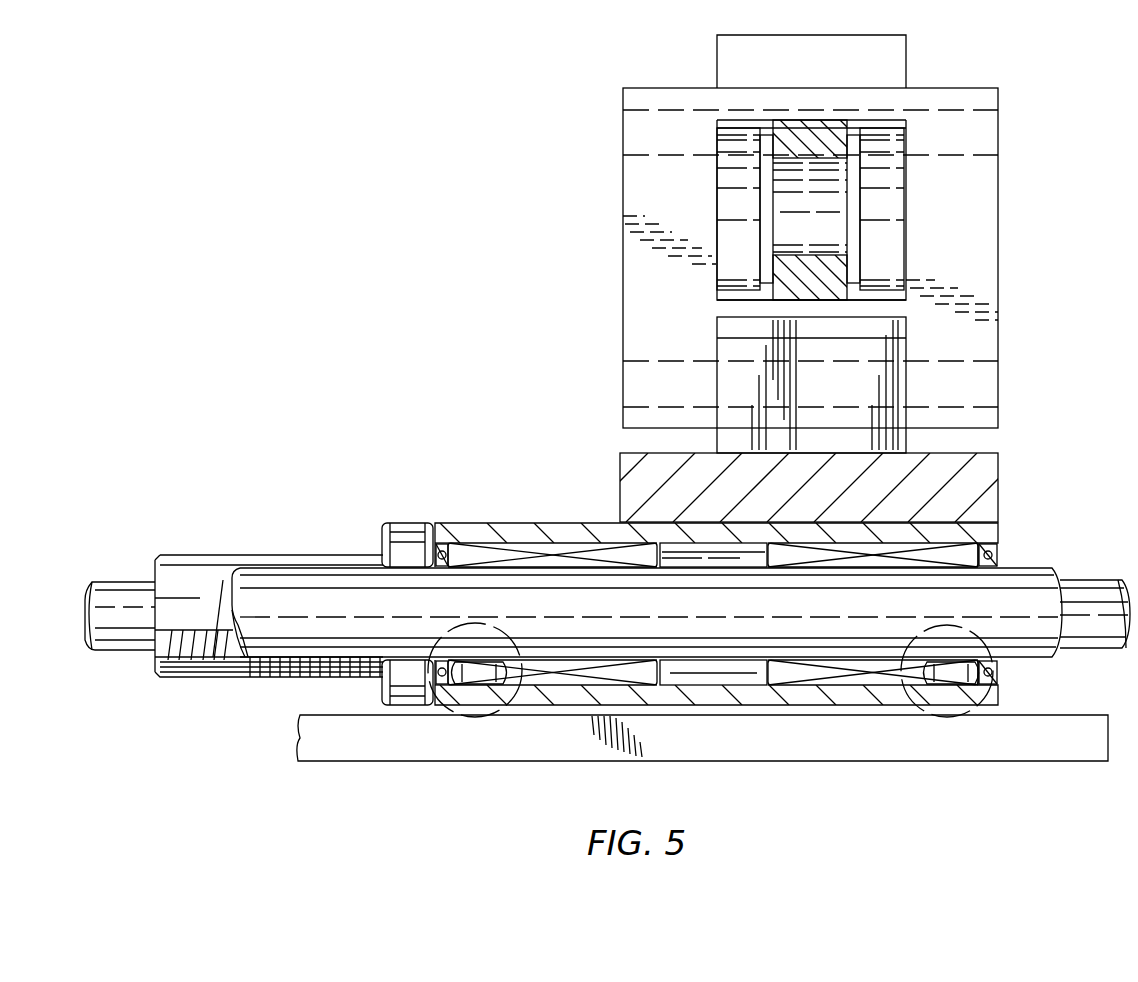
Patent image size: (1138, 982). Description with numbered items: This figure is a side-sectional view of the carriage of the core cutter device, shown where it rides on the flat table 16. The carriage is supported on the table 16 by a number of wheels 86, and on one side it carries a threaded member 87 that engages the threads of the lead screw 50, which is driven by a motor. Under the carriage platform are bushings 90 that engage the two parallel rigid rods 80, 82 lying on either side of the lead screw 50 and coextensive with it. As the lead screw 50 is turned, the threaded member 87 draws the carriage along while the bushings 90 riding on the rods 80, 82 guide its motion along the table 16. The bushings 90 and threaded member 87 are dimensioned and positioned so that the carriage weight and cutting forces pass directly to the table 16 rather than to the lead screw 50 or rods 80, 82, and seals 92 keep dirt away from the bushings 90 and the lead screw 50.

The table 16 is at (360, 712).
The threaded lead screw 50 is at (190, 607).
The rigid rod 80 is at (1024, 640).
The rigid rod 82 is at (1082, 595).
The wheel 86 is at (474, 716).
The threaded member 87 is at (402, 523).
The bushing 90 is at (593, 680).
The seal 92 is at (453, 550).